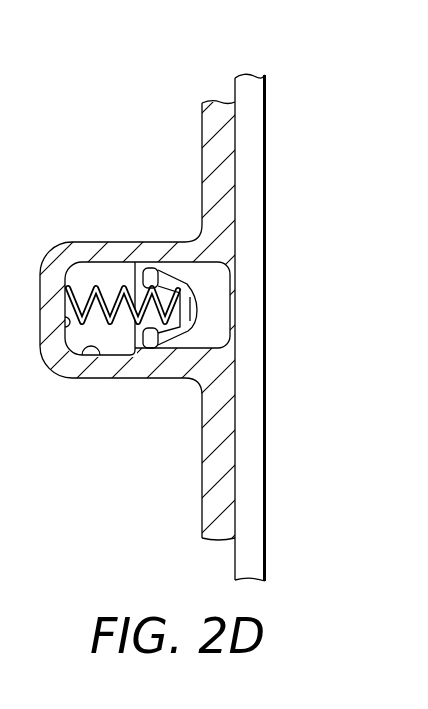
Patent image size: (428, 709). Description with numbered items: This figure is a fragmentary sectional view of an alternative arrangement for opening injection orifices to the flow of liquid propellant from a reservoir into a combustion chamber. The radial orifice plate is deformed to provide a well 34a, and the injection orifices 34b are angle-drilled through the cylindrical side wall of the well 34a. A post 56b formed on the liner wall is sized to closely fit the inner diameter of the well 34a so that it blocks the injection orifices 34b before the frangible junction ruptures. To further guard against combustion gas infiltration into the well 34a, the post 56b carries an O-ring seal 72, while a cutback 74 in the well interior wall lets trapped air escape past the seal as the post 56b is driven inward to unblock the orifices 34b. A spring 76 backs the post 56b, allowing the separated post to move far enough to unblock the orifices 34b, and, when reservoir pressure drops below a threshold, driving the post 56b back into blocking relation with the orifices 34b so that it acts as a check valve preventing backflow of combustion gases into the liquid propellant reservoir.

The well 34a is at (45, 347).
The injection orifices 34b is at (188, 243).
The post 56b is at (207, 315).
The O-ring seal 72 is at (147, 350).
The cutback 74 is at (100, 356).
The spring 76 is at (98, 286).